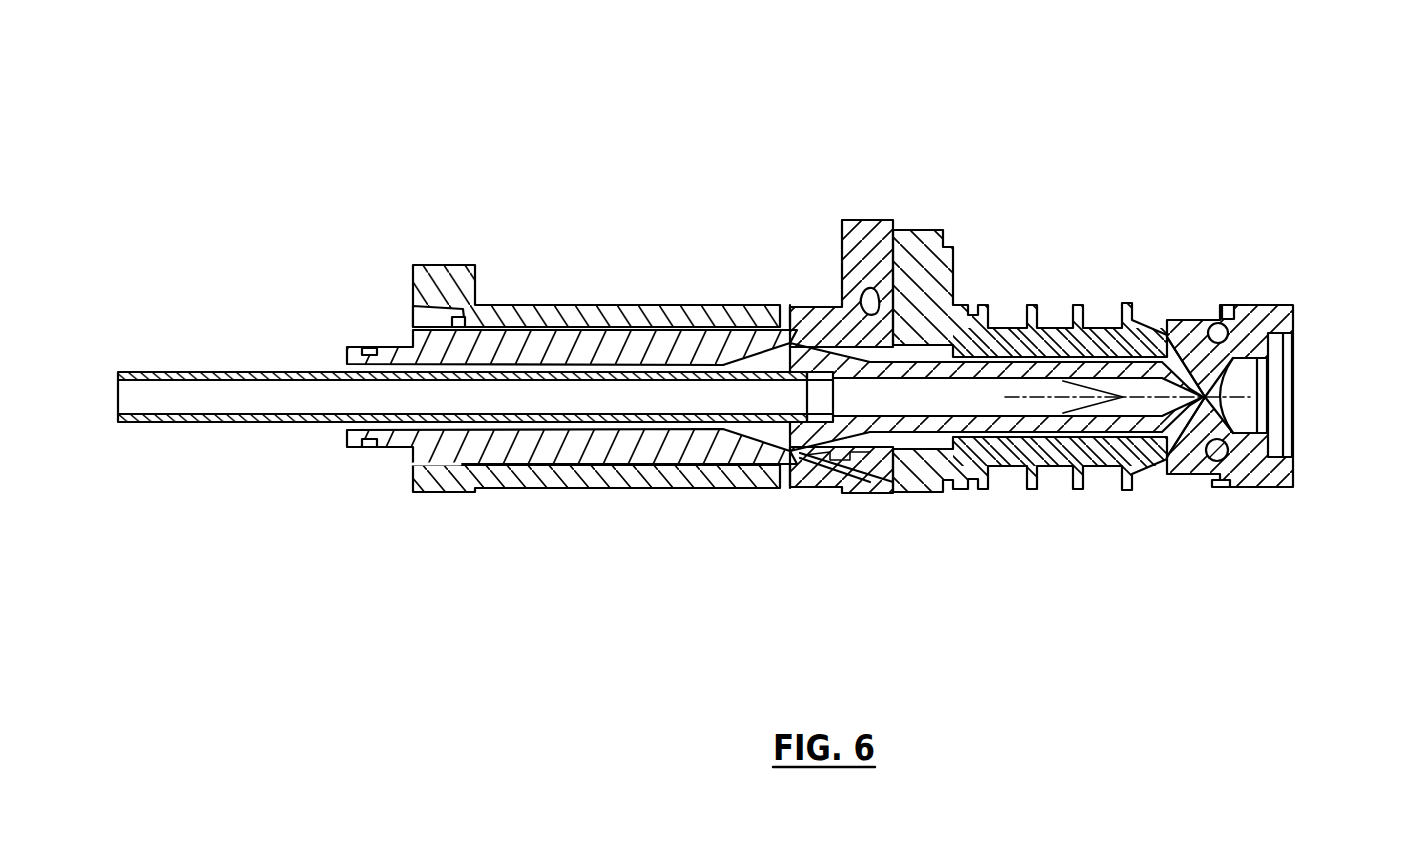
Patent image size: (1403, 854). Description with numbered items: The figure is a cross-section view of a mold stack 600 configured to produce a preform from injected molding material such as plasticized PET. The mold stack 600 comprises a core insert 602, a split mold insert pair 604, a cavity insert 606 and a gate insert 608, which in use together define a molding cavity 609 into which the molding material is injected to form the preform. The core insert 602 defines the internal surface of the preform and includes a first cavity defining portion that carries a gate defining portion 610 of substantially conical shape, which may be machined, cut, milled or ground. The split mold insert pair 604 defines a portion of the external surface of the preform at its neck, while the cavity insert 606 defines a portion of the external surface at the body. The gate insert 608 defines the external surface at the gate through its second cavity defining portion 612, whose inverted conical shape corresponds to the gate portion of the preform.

The mold stack 600 is at (755, 335).
The core insert 602 is at (475, 510).
The split mold insert pair 604 is at (840, 523).
The cavity insert 606 is at (1018, 507).
The gate insert 608 is at (1202, 507).
The molding cavity 609 is at (1055, 353).
The gate defining portion 610 is at (1213, 385).
The second cavity defining portion 612 is at (1190, 417).